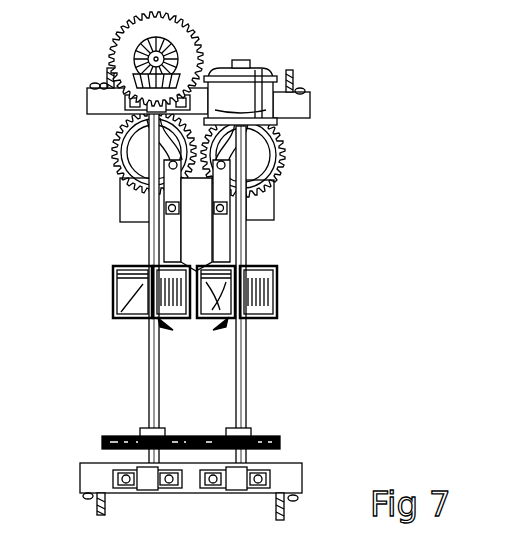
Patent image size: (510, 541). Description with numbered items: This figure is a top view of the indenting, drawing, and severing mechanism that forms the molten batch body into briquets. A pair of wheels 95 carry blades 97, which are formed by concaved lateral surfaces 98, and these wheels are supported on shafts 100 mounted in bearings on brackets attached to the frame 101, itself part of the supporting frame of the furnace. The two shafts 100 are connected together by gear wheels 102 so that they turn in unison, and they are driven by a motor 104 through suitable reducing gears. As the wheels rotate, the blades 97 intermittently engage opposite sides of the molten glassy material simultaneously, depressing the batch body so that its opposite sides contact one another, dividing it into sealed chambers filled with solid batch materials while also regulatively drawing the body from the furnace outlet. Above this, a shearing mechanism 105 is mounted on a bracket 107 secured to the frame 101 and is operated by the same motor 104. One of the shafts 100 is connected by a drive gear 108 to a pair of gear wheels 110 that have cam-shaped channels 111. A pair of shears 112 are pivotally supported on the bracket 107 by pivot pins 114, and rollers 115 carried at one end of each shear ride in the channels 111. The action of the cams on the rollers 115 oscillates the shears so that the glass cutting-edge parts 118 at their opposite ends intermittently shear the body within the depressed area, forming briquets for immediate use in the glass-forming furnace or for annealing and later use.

The drive gear 108 is at (183, 53).
The motor 104 is at (253, 102).
The gear wheels 110 is at (112, 152).
The cam-shaped channels 111 is at (123, 173).
The rollers 115 is at (135, 192).
The shears 112 is at (165, 236).
The pivot pins 114 is at (198, 224).
The shearing mechanism 105 is at (223, 218).
The bracket 107 is at (272, 217).
The blades 97 is at (120, 276).
The wheels 95 is at (116, 295).
The concaved lateral surfaces 98 is at (138, 298).
The shafts 100 is at (149, 352).
The glass cutting-edge part 118 is at (218, 320).
The gear wheels 102 is at (213, 437).
The frame 101 is at (281, 479).